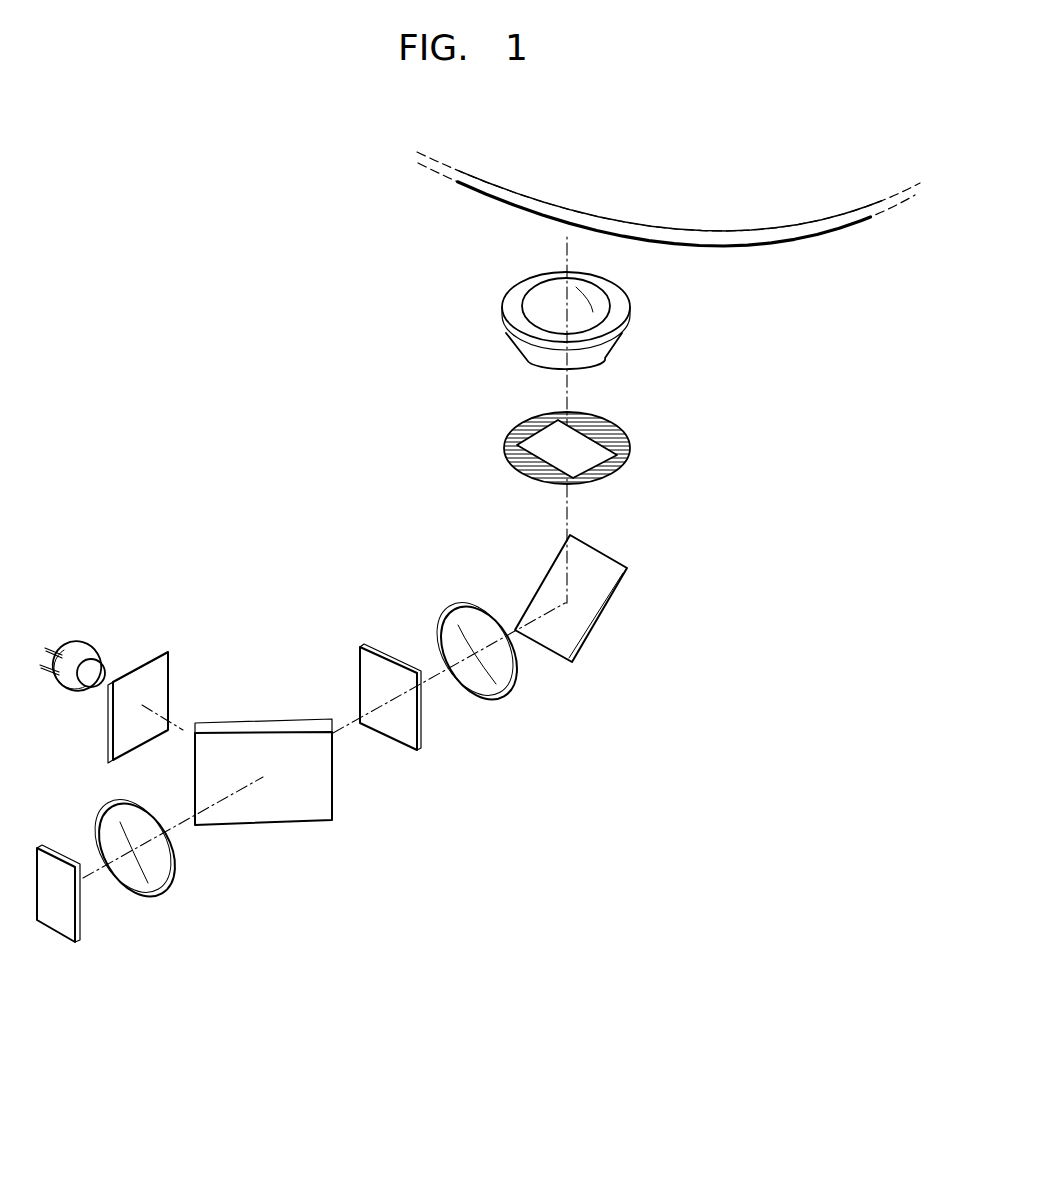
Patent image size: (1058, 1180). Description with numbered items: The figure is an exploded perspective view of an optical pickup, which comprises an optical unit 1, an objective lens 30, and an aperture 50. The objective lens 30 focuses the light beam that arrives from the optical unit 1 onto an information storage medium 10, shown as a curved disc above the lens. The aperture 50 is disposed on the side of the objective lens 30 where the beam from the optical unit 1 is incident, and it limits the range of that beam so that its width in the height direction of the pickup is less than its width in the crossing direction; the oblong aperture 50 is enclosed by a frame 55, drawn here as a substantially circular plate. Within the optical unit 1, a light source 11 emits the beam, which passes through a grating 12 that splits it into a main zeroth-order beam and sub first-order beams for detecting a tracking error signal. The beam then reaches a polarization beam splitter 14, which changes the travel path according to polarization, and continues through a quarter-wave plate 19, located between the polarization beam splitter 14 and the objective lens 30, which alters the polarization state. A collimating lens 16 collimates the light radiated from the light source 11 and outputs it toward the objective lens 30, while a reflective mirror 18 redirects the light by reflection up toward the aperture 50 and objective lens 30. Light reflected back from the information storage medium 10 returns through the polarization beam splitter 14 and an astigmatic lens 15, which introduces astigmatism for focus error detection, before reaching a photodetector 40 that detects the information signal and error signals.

The optical unit 1 is at (280, 570).
The information storage medium 10 is at (777, 217).
The light source 11 is at (95, 652).
The grating 12 is at (167, 647).
The polarization beam splitter 14 is at (280, 810).
The astigmatic lens 15 is at (160, 878).
The collimating lens 16 is at (503, 683).
The reflective mirror 18 is at (602, 592).
The quarter-wave plate 19 is at (410, 737).
The objective lens 30 is at (600, 313).
The photodetector 40 is at (72, 932).
The aperture 50 is at (545, 443).
The frame 55 is at (623, 437).